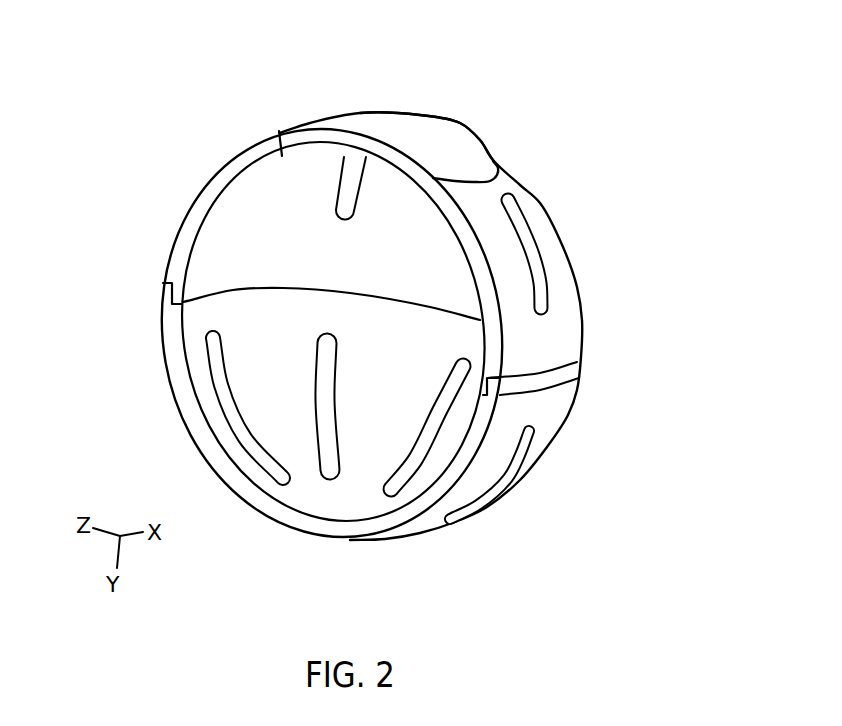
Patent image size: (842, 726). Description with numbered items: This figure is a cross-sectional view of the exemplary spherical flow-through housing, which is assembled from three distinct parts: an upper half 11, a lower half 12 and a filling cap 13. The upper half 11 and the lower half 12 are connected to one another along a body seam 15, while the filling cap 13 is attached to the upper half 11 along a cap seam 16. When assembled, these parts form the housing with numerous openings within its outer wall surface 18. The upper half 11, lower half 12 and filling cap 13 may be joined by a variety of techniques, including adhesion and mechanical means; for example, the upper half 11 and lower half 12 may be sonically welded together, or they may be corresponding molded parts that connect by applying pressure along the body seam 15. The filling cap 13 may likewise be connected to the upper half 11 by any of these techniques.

The upper half 11 is at (578, 321).
The lower half 12 is at (543, 453).
The filling cap 13 is at (447, 135).
The body seam 15 is at (243, 290).
The cap seam 16 is at (277, 133).
The outer wall surface 18 is at (548, 416).